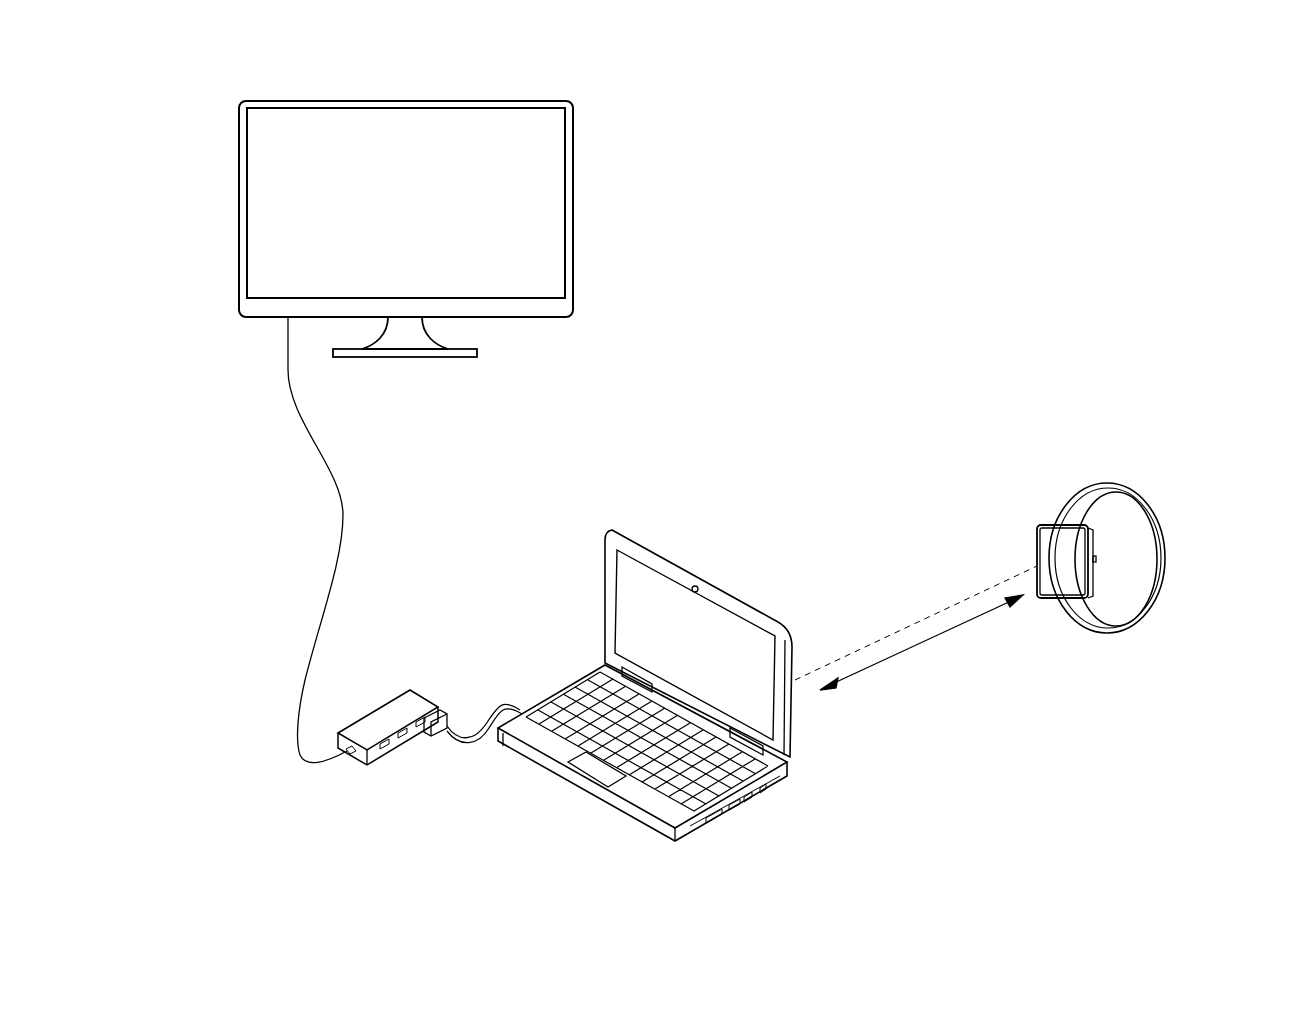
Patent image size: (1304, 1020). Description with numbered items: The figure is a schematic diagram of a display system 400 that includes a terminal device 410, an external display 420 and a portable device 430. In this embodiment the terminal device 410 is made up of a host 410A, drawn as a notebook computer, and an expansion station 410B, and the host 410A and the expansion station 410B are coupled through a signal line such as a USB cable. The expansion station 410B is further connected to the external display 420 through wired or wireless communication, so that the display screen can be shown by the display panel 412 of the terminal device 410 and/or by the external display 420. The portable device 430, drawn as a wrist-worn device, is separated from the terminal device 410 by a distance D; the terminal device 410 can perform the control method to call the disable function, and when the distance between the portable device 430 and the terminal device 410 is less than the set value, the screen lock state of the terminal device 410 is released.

The display system 400 is at (1275, 70).
The terminal device 410 is at (526, 543).
The host 410A is at (609, 565).
The expansion station 410B is at (417, 703).
The display panel 412 is at (729, 638).
The external display 420 is at (240, 227).
The portable device 430 is at (1155, 557).